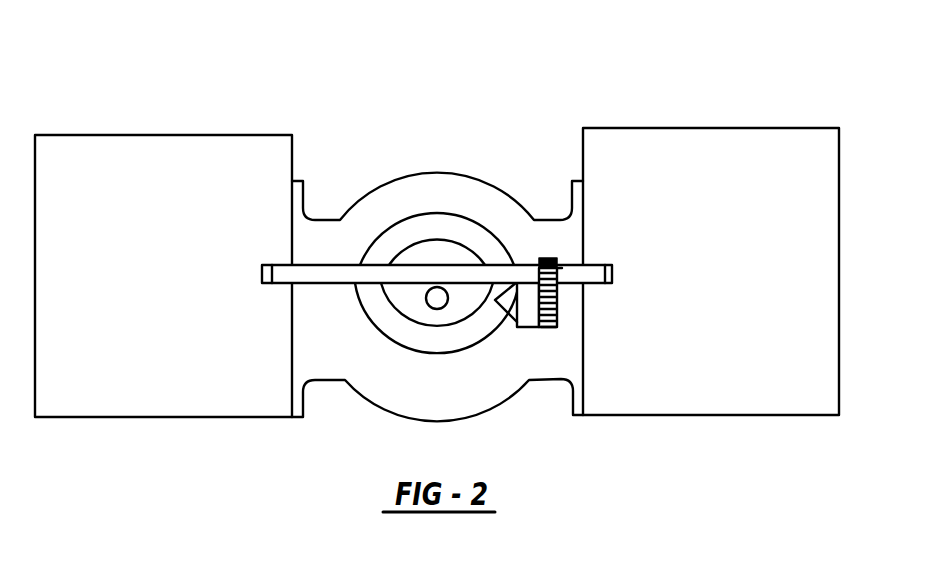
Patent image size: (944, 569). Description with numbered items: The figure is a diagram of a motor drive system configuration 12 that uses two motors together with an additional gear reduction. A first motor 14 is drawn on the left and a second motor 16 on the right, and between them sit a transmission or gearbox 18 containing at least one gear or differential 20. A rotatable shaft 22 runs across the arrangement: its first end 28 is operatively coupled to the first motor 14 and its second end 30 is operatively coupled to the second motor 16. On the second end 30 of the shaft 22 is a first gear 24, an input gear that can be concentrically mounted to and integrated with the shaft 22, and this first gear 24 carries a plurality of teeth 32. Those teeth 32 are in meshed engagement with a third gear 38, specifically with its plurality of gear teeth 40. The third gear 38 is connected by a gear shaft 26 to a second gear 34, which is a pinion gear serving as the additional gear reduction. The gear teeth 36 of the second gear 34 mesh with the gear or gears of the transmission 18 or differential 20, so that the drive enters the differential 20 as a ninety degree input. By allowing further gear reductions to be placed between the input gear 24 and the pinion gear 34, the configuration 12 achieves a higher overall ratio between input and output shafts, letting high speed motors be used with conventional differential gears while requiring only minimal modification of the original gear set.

The motor drive system configuration 12 is at (168, 99).
The first motor 14 is at (100, 173).
The second motor 16 is at (772, 150).
The transmission or gearbox 18 is at (430, 192).
The differential 20 is at (472, 363).
The shaft 22 is at (440, 275).
The first gear 24 is at (553, 258).
The gear shaft 26 is at (530, 300).
The first end 28 is at (310, 273).
The second end 30 is at (596, 272).
The teeth 32 is at (560, 268).
The second gear 34 is at (512, 284).
The gear teeth 36 is at (497, 301).
The third gear 38 is at (552, 330).
The gear teeth 40 is at (558, 314).